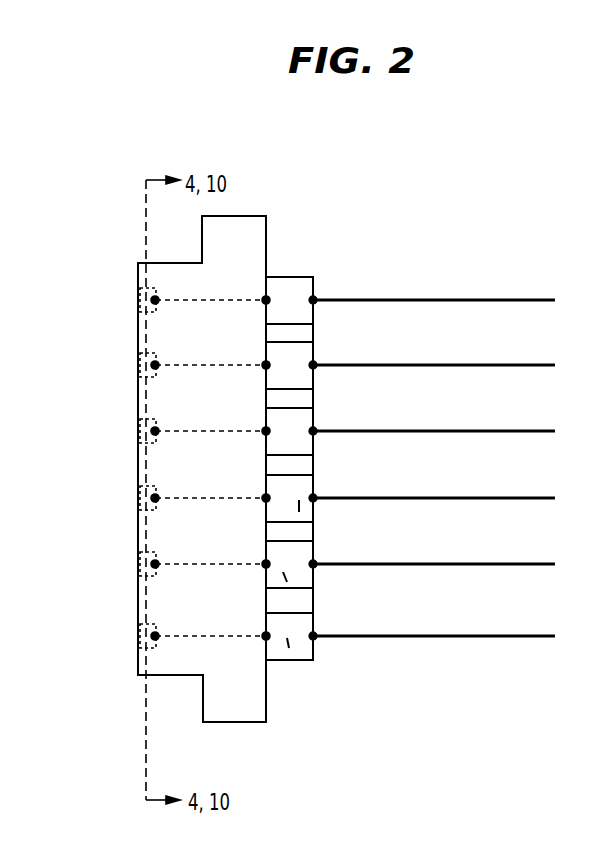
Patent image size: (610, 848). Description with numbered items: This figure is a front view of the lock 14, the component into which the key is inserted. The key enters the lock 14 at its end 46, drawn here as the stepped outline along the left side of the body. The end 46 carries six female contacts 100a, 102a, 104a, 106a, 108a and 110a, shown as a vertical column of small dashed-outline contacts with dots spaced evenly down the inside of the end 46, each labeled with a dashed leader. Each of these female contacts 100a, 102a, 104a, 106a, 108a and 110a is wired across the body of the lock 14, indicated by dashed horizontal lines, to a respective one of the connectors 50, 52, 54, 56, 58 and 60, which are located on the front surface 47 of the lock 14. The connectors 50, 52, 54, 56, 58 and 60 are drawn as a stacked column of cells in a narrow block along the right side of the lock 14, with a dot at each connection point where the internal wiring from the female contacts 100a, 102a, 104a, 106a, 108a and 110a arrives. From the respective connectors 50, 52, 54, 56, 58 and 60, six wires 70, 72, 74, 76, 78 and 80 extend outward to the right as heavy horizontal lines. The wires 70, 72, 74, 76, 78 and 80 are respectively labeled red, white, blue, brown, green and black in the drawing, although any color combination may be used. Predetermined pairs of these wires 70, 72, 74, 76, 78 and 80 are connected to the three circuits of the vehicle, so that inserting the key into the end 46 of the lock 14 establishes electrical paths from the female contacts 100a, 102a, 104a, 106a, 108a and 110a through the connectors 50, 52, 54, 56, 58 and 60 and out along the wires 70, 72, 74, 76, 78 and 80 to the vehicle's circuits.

The lock 14 is at (245, 216).
The end 46 is at (138, 272).
The front surface 47 is at (195, 665).
The connector 50 is at (293, 292).
The connector 52 is at (287, 372).
The connector 54 is at (285, 442).
The connector 56 is at (299, 507).
The connector 58 is at (285, 578).
The connector 60 is at (288, 643).
The wire 70 is at (432, 281).
The wire 72 is at (432, 346).
The wire 74 is at (432, 412).
The wire 76 is at (432, 480).
The wire 78 is at (432, 545).
The wire 80 is at (432, 616).
The female contact 100a is at (138, 305).
The female contact 102a is at (138, 370).
The female contact 104a is at (138, 436).
The female contact 106a is at (138, 503).
The female contact 108a is at (138, 569).
The female contact 110a is at (138, 641).